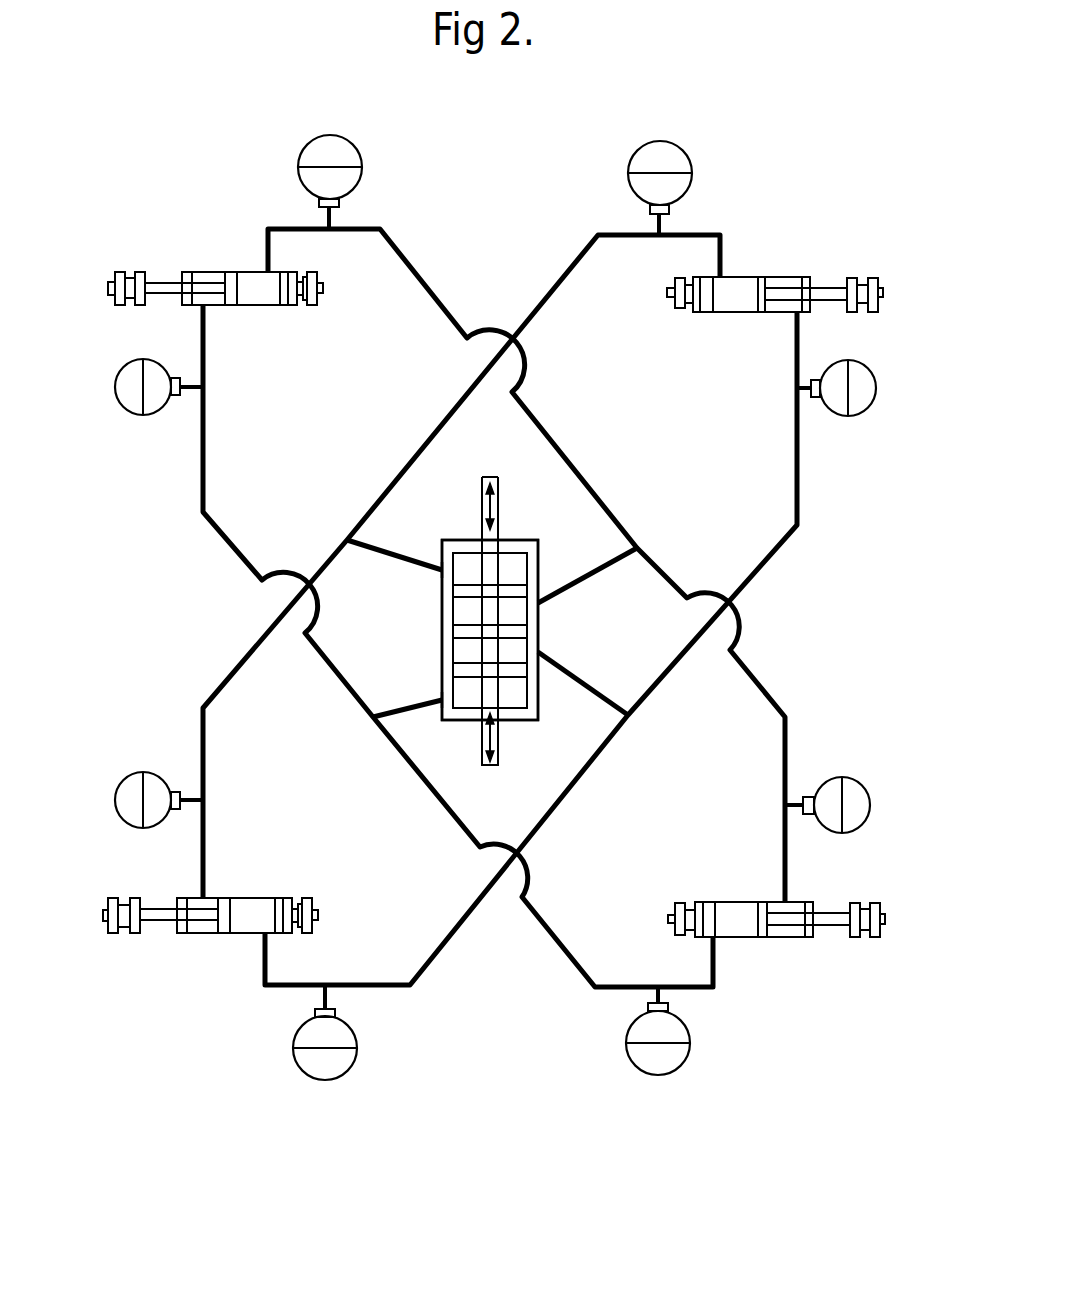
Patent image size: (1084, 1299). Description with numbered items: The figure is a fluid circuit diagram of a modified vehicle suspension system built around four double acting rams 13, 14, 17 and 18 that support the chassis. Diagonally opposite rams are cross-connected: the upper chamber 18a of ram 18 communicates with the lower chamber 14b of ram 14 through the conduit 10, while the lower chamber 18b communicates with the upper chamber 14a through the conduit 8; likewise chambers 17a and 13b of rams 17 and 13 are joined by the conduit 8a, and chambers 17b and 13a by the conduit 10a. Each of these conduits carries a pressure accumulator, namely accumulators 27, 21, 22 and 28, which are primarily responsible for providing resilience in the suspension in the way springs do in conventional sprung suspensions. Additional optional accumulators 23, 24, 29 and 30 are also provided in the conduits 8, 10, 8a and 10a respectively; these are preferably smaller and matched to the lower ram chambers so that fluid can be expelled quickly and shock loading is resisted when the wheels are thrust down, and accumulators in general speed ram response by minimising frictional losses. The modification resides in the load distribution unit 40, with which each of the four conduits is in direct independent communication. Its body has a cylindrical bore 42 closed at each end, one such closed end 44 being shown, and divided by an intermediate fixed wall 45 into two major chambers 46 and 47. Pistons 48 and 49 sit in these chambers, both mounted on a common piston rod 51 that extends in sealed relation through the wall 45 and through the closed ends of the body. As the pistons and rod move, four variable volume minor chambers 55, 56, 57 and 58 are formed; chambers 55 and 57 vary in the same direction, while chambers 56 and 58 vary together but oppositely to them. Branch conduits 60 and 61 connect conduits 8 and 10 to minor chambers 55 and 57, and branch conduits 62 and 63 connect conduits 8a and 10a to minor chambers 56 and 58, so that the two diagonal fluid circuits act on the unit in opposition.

The conduit 8 is at (200, 440).
The conduit 8a is at (800, 460).
The conduit 10 is at (414, 262).
The conduit 10a is at (545, 290).
The double acting ram 13 is at (740, 312).
The upper chamber 13a is at (740, 275).
The lower chamber 13b is at (790, 275).
The double acting ram 14 is at (735, 948).
The upper chamber 14a is at (738, 902).
The lower chamber 14b is at (808, 900).
The double acting ram 17 is at (253, 938).
The upper chamber 17a is at (252, 898).
The lower chamber 17b is at (200, 898).
The double acting ram 18 is at (250, 305).
The upper chamber 18a is at (240, 268).
The lower chamber 18b is at (196, 268).
The pressure accumulator 21 is at (288, 1085).
The pressure accumulator 22 is at (299, 129).
The accumulator 23 is at (120, 368).
The accumulator 24 is at (866, 784).
The pressure accumulator 27 is at (692, 1087).
The pressure accumulator 28 is at (698, 136).
The accumulator 29 is at (868, 370).
The accumulator 30 is at (122, 786).
The load distribution unit 40 is at (425, 608).
The cylindrical bore 42 is at (507, 705).
The closed end 44 is at (468, 538).
The intermediate fixed wall 45 is at (438, 635).
The major chamber 46 is at (438, 555).
The major chamber 47 is at (442, 710).
The piston 48 is at (458, 677).
The piston 49 is at (472, 592).
The piston rod 51 is at (483, 750).
The minor chamber 55 is at (507, 690).
The minor chamber 56 is at (518, 648).
The minor chamber 57 is at (518, 612).
The minor chamber 58 is at (518, 567).
The branch conduit 60 is at (393, 718).
The branch conduit 61 is at (572, 582).
The branch conduit 62 is at (600, 688).
The branch conduit 63 is at (372, 542).